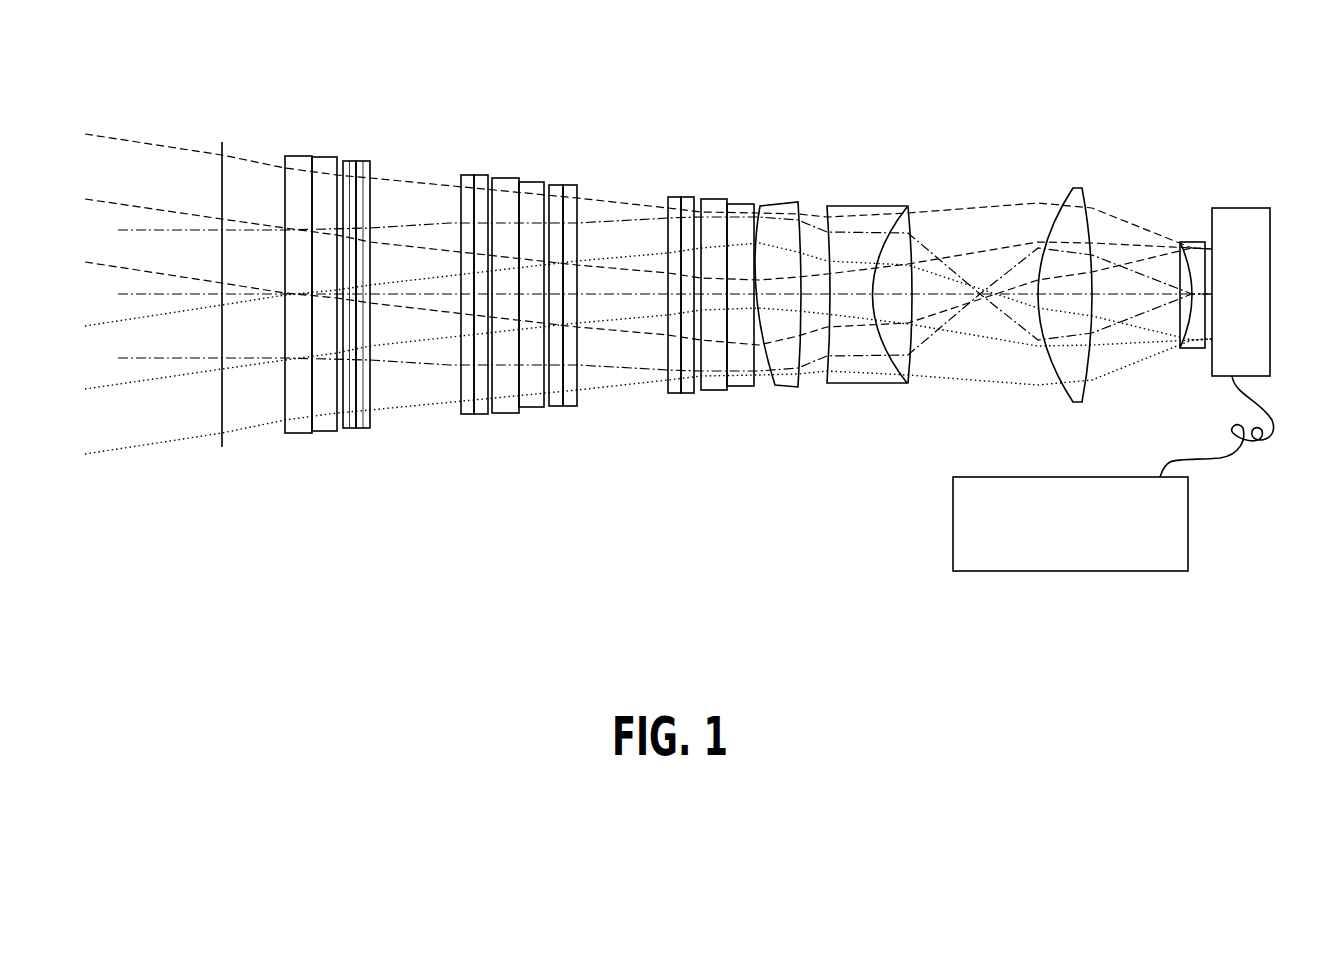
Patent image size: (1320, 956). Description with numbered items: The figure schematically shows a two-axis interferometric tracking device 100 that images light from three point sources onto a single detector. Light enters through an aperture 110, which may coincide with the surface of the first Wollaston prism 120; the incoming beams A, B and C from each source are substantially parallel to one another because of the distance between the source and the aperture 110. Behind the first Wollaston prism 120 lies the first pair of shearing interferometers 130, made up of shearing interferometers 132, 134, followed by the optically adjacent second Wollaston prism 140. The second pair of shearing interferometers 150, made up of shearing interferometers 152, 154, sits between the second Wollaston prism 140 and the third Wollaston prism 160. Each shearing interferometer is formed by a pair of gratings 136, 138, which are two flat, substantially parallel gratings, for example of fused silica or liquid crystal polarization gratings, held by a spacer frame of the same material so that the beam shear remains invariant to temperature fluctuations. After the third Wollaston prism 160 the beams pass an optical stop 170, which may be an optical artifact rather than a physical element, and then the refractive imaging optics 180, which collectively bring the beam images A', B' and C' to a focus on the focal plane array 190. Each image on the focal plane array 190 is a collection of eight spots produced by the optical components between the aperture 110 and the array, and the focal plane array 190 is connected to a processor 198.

The two-axis interferometric tracking device 100 is at (551, 108).
The aperture 110 is at (222, 450).
The first Wollaston prism 120 is at (286, 438).
The first pair of shearing interferometers 130 is at (391, 341).
The shearing interferometer 132 is at (358, 440).
The shearing interferometer 134 is at (475, 427).
The grating 136 is at (350, 160).
The grating 138 is at (363, 160).
The second Wollaston prism 140 is at (493, 418).
The second pair of shearing interferometers 150 is at (621, 392).
The shearing interferometer 152 is at (566, 420).
The shearing interferometer 154 is at (668, 346).
The third Wollaston prism 160 is at (702, 396).
The optical stop 170 is at (760, 205).
The imaging optics 180 is at (1205, 200).
The focal plane array 190 is at (1238, 207).
The processor 198 is at (1113, 473).